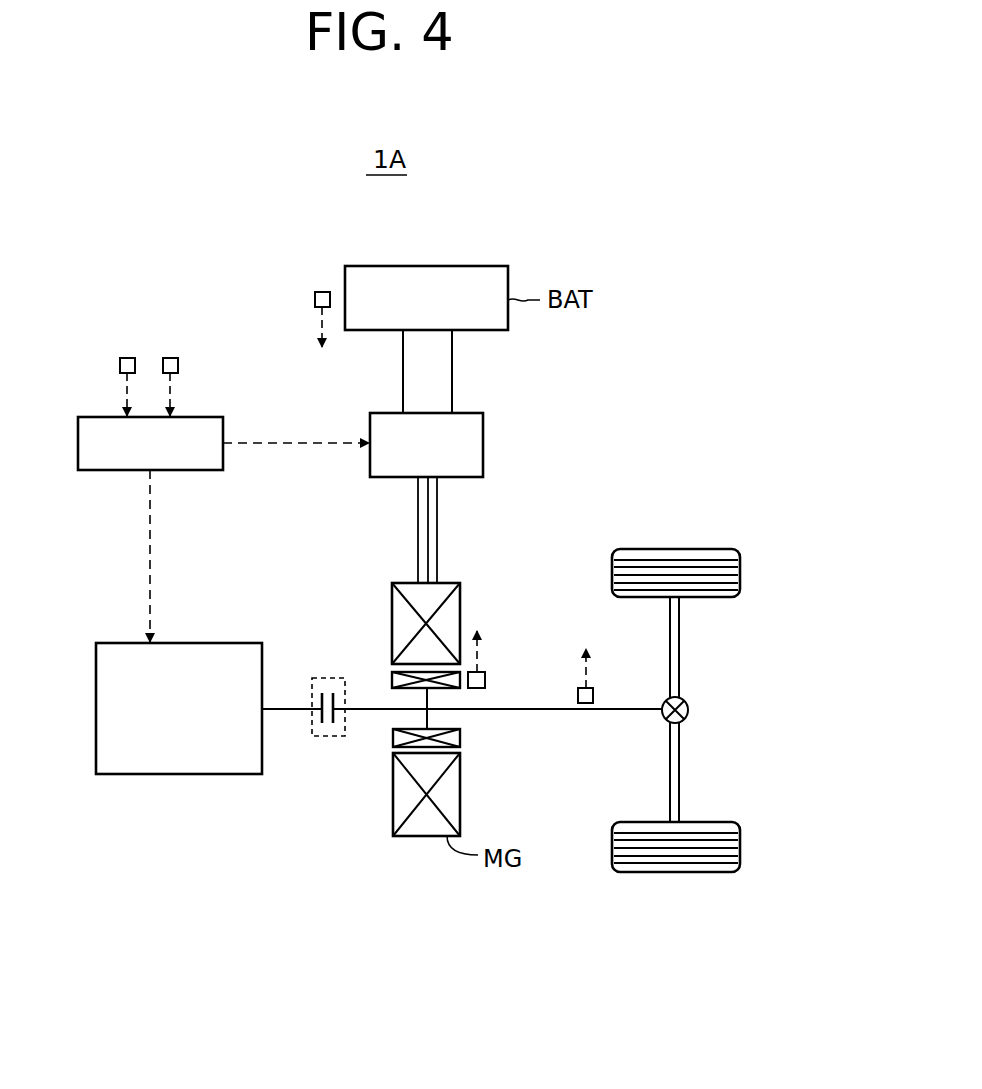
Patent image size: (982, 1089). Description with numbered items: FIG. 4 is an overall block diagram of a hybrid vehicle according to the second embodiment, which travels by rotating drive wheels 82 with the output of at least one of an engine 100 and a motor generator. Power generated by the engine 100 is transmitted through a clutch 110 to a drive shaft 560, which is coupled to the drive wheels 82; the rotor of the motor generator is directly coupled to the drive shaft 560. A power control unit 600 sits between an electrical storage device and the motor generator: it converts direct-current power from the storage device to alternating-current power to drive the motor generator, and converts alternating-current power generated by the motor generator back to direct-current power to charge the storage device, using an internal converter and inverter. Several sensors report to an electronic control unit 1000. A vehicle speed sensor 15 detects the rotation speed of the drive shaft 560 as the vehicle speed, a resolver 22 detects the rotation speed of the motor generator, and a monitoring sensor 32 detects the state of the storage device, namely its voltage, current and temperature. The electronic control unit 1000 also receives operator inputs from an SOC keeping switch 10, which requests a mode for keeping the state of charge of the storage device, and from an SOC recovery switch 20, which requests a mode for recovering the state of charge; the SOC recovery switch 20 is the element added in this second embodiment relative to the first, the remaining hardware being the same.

The SOC keeping switch 10 is at (128, 358).
The SOC recovery switch 20 is at (171, 358).
The monitoring sensor 32 is at (323, 292).
The electronic control unit (ECU) 1000 is at (197, 470).
The power control unit (PCU) 600 is at (483, 443).
The resolver 22 is at (485, 680).
The vehicle speed sensor 15 is at (593, 691).
The engine 100 is at (178, 774).
The clutch 110 is at (325, 736).
The drive shaft 560 is at (612, 709).
The drive wheels 82 is at (703, 549).